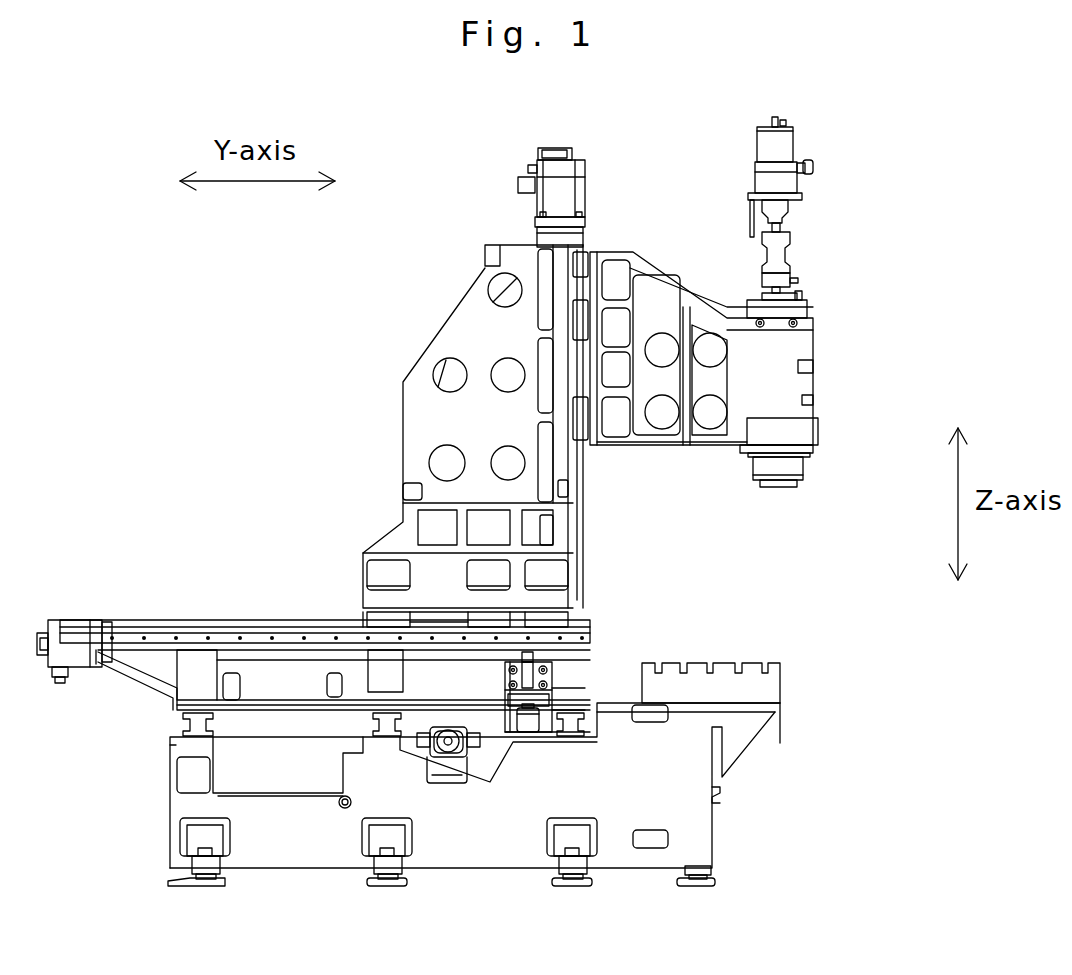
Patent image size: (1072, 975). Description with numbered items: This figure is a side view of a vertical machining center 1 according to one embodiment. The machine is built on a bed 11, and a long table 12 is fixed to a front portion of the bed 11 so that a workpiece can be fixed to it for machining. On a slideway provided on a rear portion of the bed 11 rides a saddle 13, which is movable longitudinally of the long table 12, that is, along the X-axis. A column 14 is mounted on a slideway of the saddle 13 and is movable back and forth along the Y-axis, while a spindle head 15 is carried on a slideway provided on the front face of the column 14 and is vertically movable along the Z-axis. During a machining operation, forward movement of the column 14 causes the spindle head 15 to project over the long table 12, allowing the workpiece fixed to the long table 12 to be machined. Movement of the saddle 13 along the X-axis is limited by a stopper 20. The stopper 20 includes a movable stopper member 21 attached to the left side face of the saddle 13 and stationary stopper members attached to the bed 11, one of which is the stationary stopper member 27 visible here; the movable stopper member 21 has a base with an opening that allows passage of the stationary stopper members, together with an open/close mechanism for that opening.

The vertical machining center 1 is at (905, 158).
The bed 11 is at (483, 853).
The long table 12 is at (768, 688).
The saddle 13 is at (151, 662).
The column 14 is at (413, 421).
The spindle head 15 is at (813, 383).
The stopper 20 is at (712, 565).
The movable stopper member 21 is at (527, 700).
The stationary stopper member 27 is at (530, 720).